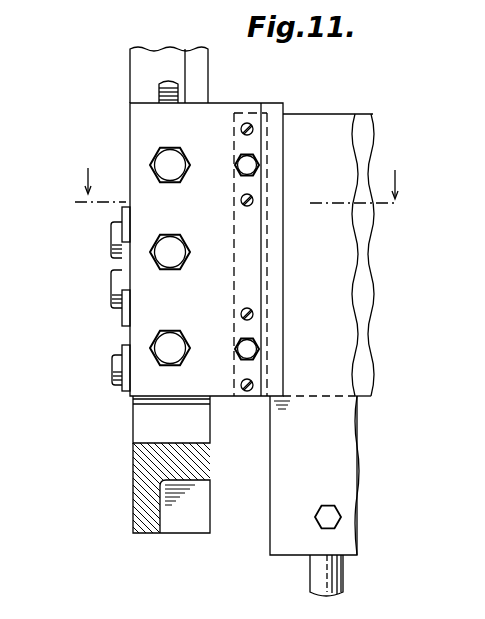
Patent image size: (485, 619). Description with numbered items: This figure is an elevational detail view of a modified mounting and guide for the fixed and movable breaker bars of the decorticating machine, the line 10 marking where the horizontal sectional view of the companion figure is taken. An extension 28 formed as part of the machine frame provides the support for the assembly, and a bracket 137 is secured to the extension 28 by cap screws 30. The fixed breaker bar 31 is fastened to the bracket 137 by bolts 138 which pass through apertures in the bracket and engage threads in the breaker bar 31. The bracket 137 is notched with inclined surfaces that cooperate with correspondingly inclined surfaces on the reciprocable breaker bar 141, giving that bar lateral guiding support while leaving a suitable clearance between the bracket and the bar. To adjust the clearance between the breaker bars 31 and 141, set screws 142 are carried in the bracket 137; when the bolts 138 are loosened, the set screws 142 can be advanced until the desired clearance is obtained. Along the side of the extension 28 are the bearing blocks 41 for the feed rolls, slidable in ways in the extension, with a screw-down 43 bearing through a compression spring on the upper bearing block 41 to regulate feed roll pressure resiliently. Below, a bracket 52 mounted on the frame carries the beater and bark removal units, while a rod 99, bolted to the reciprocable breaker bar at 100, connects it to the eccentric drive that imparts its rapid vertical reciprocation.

The section line 10 is at (238, 185).
The extension 28 is at (145, 414).
The cap screw 30 is at (155, 162).
The fixed breaker bar 31 is at (362, 272).
The bearing block 41 is at (127, 230).
The screw-down 43 is at (160, 91).
The bracket 52 is at (140, 494).
The rod 99 is at (318, 578).
The bolt connection 100 is at (323, 512).
The bracket 137 is at (137, 127).
The bolt 138 is at (252, 165).
The reciprocable breaker bar 141 is at (348, 458).
The set screw 142 is at (254, 129).